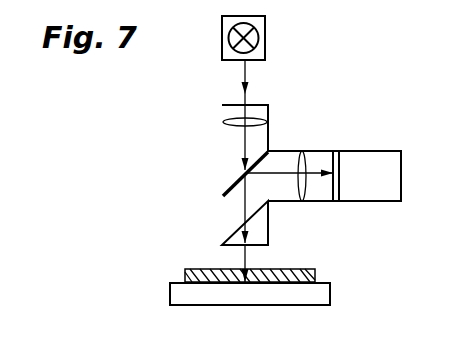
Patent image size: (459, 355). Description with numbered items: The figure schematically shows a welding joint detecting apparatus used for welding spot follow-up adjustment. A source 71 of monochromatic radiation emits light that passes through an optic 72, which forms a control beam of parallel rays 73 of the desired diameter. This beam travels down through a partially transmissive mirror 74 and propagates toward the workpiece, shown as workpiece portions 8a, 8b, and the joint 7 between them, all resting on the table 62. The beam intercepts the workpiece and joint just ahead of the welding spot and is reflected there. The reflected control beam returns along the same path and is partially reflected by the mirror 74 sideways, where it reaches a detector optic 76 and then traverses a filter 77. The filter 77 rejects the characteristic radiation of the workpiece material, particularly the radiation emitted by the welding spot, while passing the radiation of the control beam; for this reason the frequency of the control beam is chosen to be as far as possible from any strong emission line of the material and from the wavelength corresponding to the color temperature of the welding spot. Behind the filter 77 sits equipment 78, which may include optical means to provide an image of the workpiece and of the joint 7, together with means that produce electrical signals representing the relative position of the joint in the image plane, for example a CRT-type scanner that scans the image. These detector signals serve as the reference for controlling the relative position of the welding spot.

The source of monochromatic radiation 71 is at (262, 22).
The optic 72 is at (267, 108).
The control beam of parallel rays 73 is at (242, 140).
The partially transmissive mirror 74 is at (236, 180).
The detector optic 76 is at (303, 160).
The filter 77 is at (332, 162).
The equipment 78 is at (370, 176).
The workpiece 8a is at (292, 268).
The workpiece 8b is at (210, 268).
The table 62 is at (273, 297).
The joint 7 is at (245, 278).